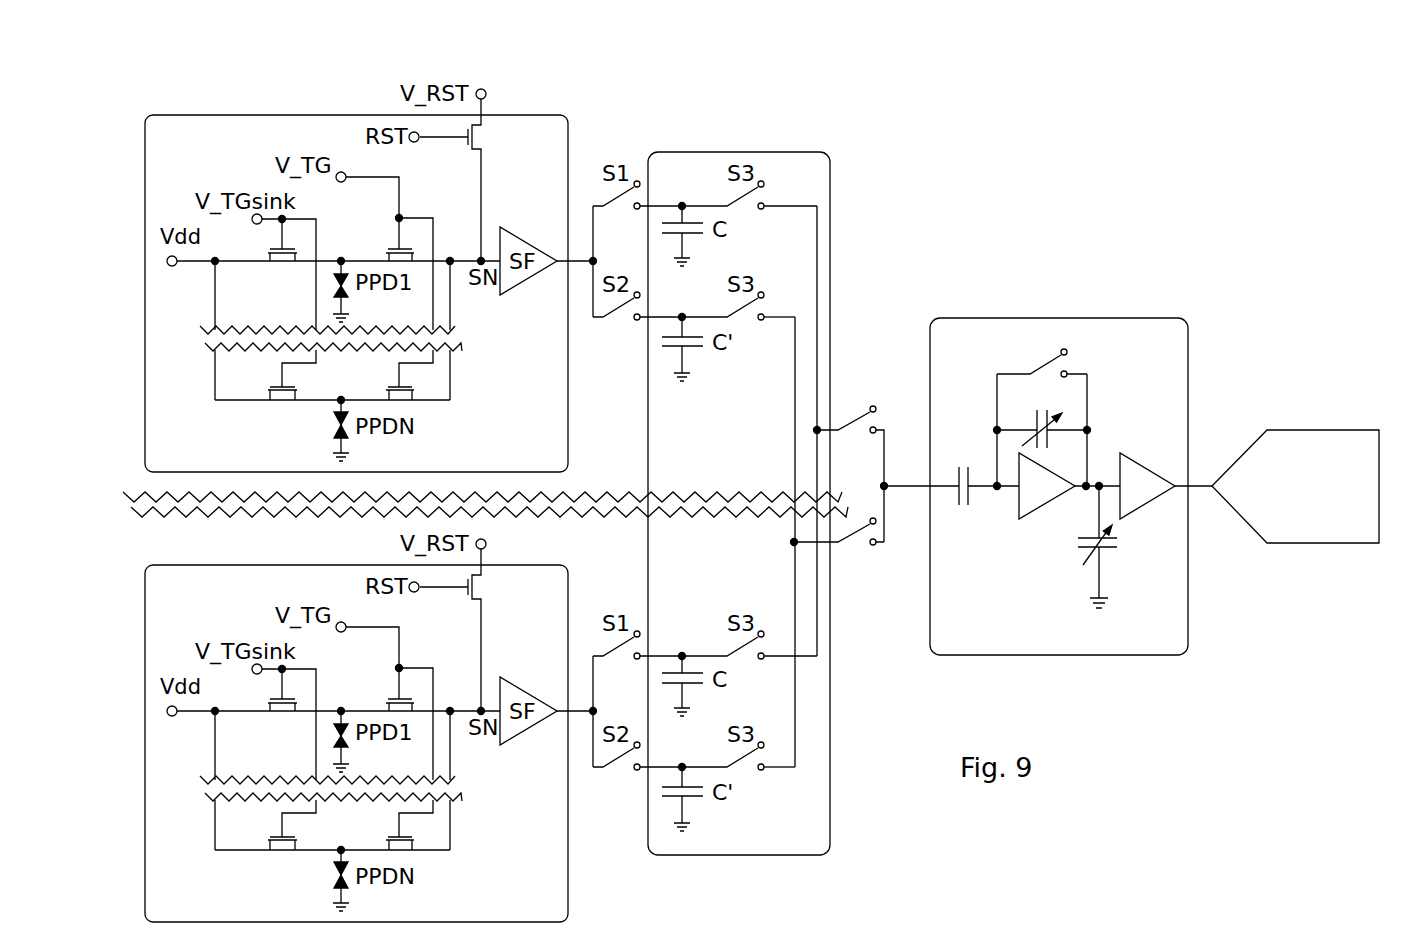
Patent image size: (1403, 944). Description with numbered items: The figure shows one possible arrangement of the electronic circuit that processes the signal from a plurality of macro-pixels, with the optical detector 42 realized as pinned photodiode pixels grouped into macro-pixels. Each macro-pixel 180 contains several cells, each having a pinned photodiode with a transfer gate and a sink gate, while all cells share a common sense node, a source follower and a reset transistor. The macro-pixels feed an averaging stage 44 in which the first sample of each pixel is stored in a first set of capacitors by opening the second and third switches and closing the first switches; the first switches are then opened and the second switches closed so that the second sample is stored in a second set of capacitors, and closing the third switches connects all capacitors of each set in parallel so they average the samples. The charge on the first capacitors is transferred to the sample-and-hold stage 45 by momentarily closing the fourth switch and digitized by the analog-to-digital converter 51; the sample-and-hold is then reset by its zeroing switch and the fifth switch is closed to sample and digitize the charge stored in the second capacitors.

The optical detector 42 is at (545, 83).
The averaging stage 44 is at (798, 152).
The sample-and-hold stage 45 is at (1108, 318).
The ADC 51 is at (1291, 436).
The macro-pixel 180 is at (559, 150).